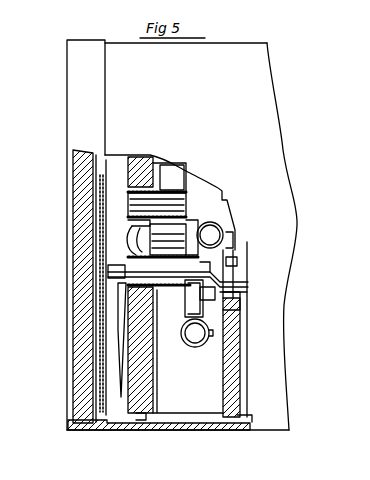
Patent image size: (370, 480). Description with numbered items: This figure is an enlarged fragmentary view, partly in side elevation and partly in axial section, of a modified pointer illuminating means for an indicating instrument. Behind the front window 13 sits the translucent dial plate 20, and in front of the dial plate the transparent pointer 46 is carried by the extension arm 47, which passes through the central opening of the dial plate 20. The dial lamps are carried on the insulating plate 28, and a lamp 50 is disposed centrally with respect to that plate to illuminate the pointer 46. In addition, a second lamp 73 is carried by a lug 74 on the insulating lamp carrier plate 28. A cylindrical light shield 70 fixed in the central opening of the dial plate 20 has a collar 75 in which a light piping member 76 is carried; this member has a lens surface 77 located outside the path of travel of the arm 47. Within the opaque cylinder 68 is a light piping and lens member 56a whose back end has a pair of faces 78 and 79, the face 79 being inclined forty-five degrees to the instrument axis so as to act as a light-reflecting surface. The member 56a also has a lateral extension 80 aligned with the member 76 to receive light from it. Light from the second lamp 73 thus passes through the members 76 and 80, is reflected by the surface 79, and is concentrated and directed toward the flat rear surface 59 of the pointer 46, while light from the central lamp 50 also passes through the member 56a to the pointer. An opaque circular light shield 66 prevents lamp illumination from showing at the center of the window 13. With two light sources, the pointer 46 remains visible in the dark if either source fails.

The front window 13 is at (72, 340).
The dial plate 20 is at (134, 410).
The insulating plate 28 is at (243, 356).
The pointer 46 is at (117, 310).
The extension arm 47 is at (226, 273).
The lamp 50 is at (211, 232).
The light piping and lens member 56a is at (130, 222).
The flat rear surface 59 is at (127, 236).
The opaque circular light shield 66 is at (98, 260).
The opaque cylinder 68 is at (180, 212).
The cylindrical light shield 70 is at (168, 190).
The second lamp 73 is at (192, 340).
The lug 74 is at (212, 339).
The collar 75 is at (186, 292).
The light piping member 76 is at (233, 309).
The lens surface 77 is at (216, 293).
The face 78 is at (194, 228).
The inclined face 79 is at (182, 246).
The lateral extension 80 is at (234, 262).